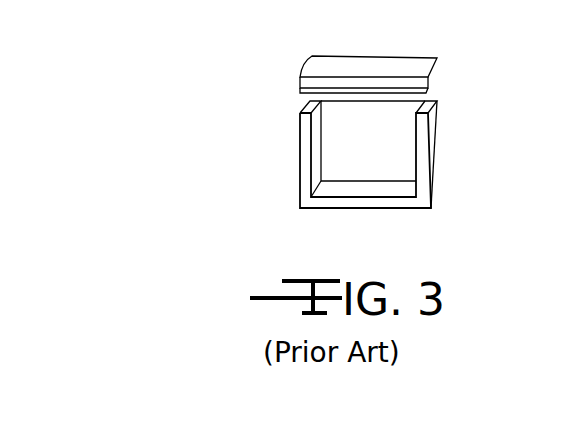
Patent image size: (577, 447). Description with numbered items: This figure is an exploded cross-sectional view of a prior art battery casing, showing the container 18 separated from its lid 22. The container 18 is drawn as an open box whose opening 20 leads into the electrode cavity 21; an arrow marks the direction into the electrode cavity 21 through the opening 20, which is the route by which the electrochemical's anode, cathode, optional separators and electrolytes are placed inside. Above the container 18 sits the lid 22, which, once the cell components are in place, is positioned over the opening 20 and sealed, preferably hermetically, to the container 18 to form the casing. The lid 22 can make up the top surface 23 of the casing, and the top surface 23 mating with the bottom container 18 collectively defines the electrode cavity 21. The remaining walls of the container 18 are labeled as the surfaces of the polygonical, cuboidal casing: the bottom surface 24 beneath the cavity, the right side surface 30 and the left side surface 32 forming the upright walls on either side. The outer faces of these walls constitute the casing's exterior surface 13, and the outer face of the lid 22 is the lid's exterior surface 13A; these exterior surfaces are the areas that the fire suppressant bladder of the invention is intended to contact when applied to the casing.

The exterior surface 13 is at (300, 178).
The lid's exterior surface 13A is at (316, 76).
The lid 22 is at (363, 77).
The top surface 23 is at (373, 59).
The opening 20 is at (337, 143).
The electrode cavity 21 is at (375, 140).
The right side surface 30 is at (425, 130).
The container 18 is at (432, 143).
The left side surface 32 is at (300, 150).
The bottom surface 24 is at (367, 210).